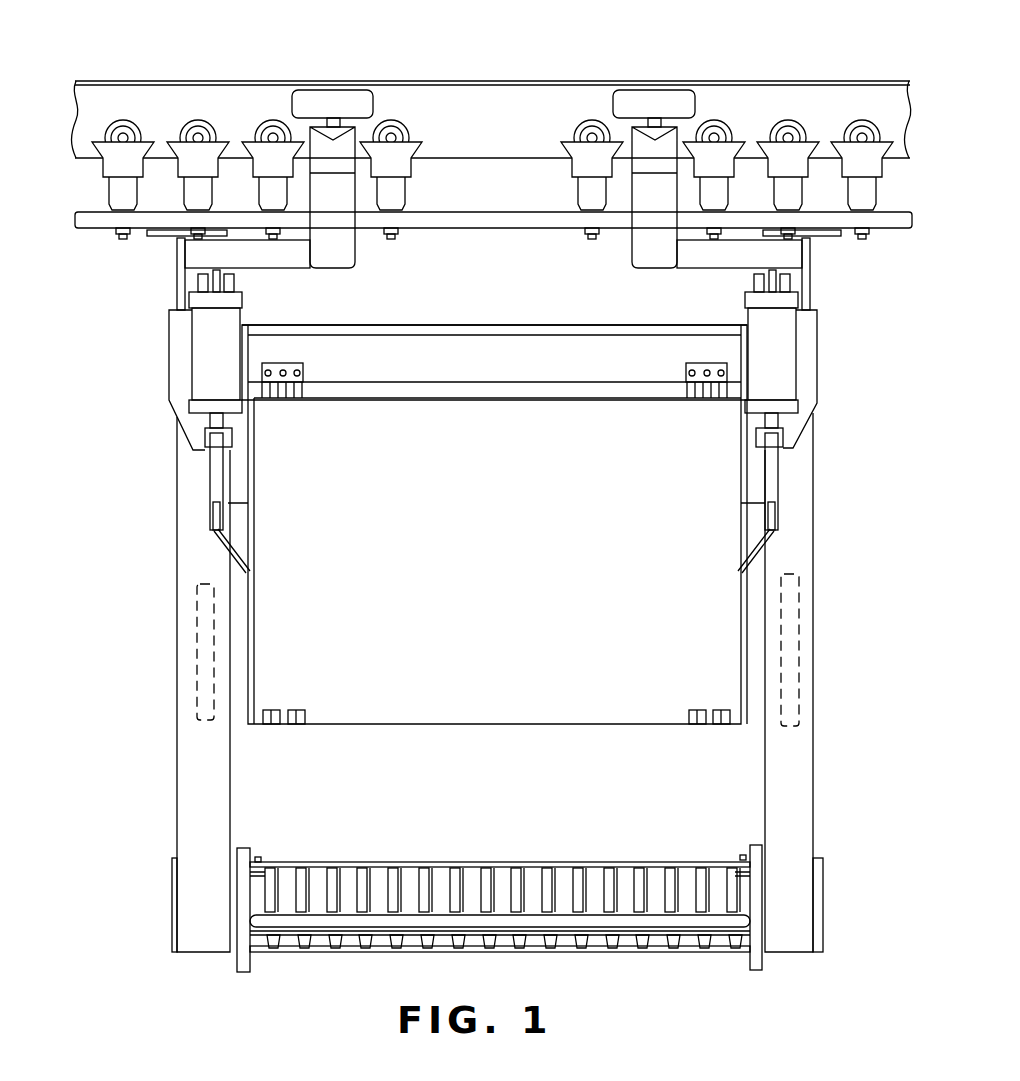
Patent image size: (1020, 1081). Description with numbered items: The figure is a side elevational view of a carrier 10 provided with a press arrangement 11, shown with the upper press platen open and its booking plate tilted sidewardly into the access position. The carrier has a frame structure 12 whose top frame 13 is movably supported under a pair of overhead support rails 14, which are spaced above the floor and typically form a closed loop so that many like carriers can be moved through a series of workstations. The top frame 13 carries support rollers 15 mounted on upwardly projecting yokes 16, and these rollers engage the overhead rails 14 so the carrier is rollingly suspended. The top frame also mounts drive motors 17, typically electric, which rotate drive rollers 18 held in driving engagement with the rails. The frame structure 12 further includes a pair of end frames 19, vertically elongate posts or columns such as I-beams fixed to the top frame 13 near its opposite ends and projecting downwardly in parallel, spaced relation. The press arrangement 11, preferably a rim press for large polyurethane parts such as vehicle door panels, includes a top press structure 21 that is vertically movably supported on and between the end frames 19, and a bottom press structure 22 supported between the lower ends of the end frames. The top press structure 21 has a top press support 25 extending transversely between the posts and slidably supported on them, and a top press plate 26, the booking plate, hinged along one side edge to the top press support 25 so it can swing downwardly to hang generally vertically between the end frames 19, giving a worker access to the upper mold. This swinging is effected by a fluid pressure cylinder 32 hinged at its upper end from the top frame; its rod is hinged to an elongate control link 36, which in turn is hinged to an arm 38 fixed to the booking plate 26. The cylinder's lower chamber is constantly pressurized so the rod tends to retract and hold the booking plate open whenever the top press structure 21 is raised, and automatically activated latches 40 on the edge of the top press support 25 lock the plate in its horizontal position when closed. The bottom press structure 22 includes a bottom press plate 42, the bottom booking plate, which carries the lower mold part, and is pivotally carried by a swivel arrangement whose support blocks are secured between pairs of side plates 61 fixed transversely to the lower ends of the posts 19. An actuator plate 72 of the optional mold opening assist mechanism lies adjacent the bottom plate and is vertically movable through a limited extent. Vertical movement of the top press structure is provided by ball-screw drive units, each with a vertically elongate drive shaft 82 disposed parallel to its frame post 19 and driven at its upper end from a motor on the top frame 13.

The carrier 10 is at (147, 268).
The press arrangement 11 is at (833, 462).
The frame structure 12 is at (168, 487).
The top frame 13 is at (543, 222).
The overhead support rails 14 is at (472, 98).
The support rollers 15 is at (122, 122).
The yokes 16 is at (118, 185).
The drive motors 17 is at (352, 255).
The drive rollers 18 is at (336, 100).
The end frames 19 is at (190, 742).
The top press structure 21 is at (520, 336).
The bottom press structure 22 is at (499, 904).
The top press support 25 is at (589, 348).
The top press plate 26 is at (376, 700).
The fluid pressure cylinder 32 is at (187, 355).
The control link 36 is at (212, 463).
The arm 38 is at (776, 548).
The latches 40 is at (295, 370).
The bottom press plate 42 is at (577, 860).
The side plates 61 is at (822, 893).
The actuator plate 72 is at (660, 955).
The drive shaft 82 is at (198, 622).